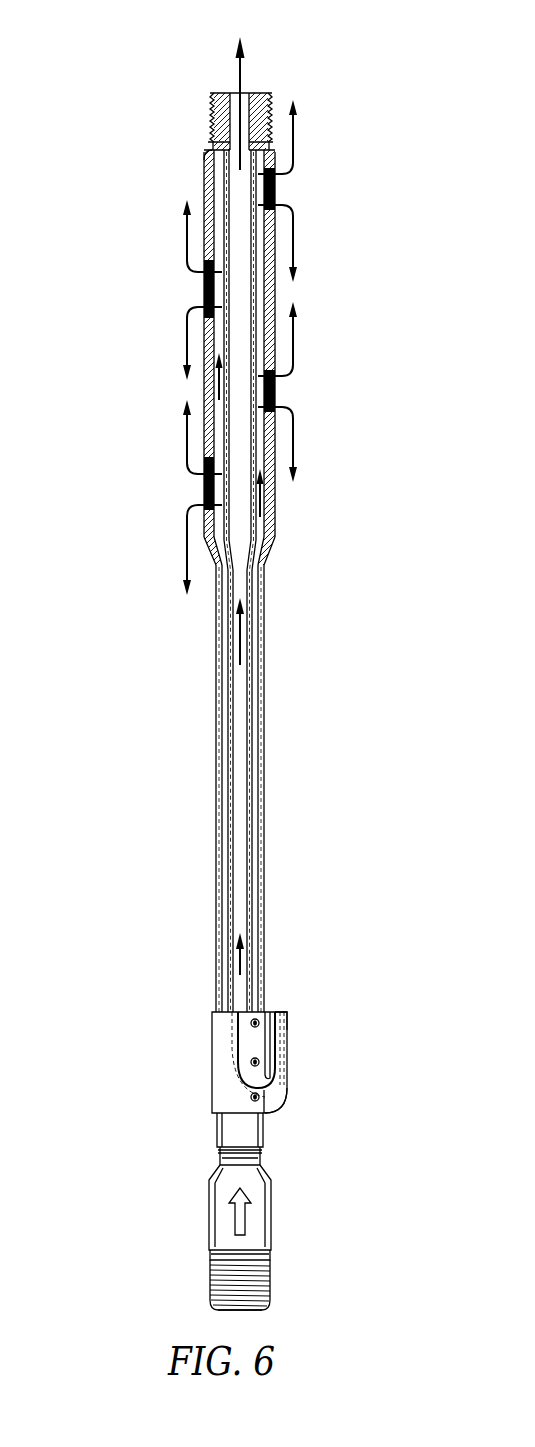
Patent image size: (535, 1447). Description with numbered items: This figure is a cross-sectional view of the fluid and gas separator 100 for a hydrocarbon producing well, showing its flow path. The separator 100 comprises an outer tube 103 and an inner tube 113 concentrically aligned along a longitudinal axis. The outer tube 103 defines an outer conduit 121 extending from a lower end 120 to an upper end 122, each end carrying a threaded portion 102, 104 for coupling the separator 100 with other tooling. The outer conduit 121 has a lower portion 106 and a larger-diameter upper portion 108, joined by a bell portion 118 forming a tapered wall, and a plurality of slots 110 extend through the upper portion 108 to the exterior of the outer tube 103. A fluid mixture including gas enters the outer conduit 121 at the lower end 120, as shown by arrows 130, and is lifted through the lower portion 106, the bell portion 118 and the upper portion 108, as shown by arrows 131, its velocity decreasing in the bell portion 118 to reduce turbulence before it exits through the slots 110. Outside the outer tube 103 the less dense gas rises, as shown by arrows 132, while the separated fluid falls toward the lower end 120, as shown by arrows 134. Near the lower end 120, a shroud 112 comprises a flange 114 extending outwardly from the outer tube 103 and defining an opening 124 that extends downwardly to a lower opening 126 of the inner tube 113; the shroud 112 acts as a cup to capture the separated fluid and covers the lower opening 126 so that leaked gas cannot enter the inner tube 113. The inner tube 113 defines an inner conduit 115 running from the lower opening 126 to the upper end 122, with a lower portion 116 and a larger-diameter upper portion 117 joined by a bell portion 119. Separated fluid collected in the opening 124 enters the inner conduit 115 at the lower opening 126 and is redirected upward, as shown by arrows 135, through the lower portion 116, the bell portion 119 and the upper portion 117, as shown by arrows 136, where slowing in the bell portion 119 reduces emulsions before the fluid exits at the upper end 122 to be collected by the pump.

The fluid and gas separator 100 is at (165, 15).
The threaded portion 102 is at (210, 116).
The outer tube 103 is at (213, 656).
The threaded portion 104 is at (209, 1285).
The lower portion of the outer conduit 106 is at (263, 763).
The upper portion of the outer conduit 108 is at (278, 291).
The slots 110 is at (270, 190).
The shroud 112 is at (226, 1058).
The inner tube 113 is at (227, 735).
The flange 114 is at (288, 1059).
The inner conduit 115 is at (241, 696).
The lower portion of the inner conduit 116 is at (255, 650).
The upper portion of the inner conduit 117 is at (221, 178).
The bell portion of the outer conduit 118 is at (270, 557).
The bell portion of the inner conduit 119 is at (213, 549).
The lower end 120 is at (223, 1312).
The outer conduit 121 is at (219, 823).
The upper end 122 is at (231, 93).
The opening 124 is at (283, 1004).
The lower opening of the inner tube 126 is at (286, 1092).
The arrows 130 is at (249, 1214).
The arrows 131 is at (219, 389).
The arrows 132 is at (297, 144).
The arrows 134 is at (294, 237).
The arrows 135 is at (240, 973).
The arrows 136 is at (245, 67).